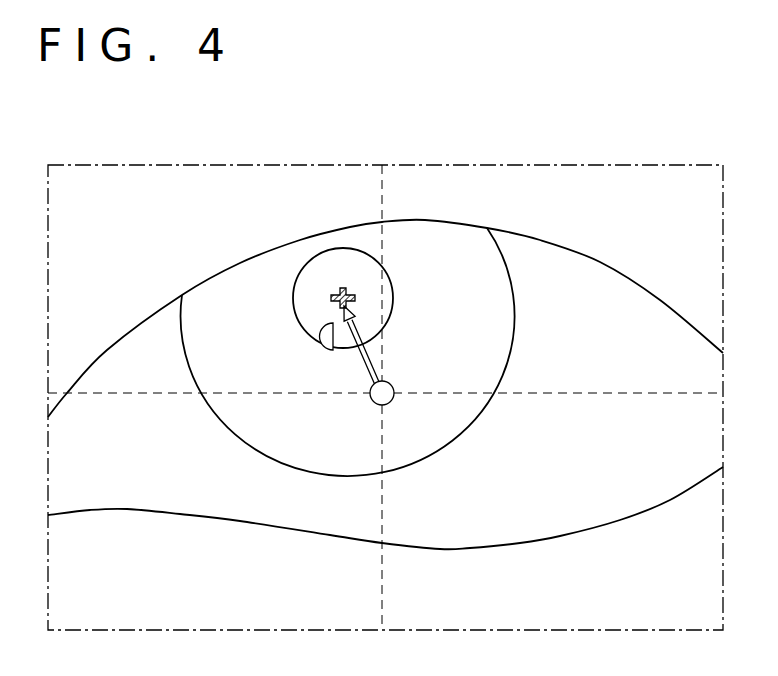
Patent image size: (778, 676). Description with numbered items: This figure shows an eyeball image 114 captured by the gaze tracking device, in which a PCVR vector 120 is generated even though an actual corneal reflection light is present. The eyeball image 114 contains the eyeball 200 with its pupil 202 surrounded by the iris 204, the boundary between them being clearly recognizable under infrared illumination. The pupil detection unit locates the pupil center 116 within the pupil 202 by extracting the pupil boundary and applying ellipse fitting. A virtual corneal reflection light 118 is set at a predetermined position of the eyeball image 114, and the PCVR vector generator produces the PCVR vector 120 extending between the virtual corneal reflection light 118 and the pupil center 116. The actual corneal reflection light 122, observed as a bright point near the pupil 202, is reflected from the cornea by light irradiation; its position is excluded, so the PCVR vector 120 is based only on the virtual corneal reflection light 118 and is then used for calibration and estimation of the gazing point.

The eyeball image 114 is at (668, 165).
The eyeball 200 is at (600, 262).
The pupil 202 is at (393, 290).
The iris 204 is at (514, 307).
The pupil center 116 is at (331, 298).
The virtual corneal reflection light 118 is at (393, 386).
The PCVR vector 120 is at (364, 358).
The actual corneal reflection light 122 is at (318, 347).